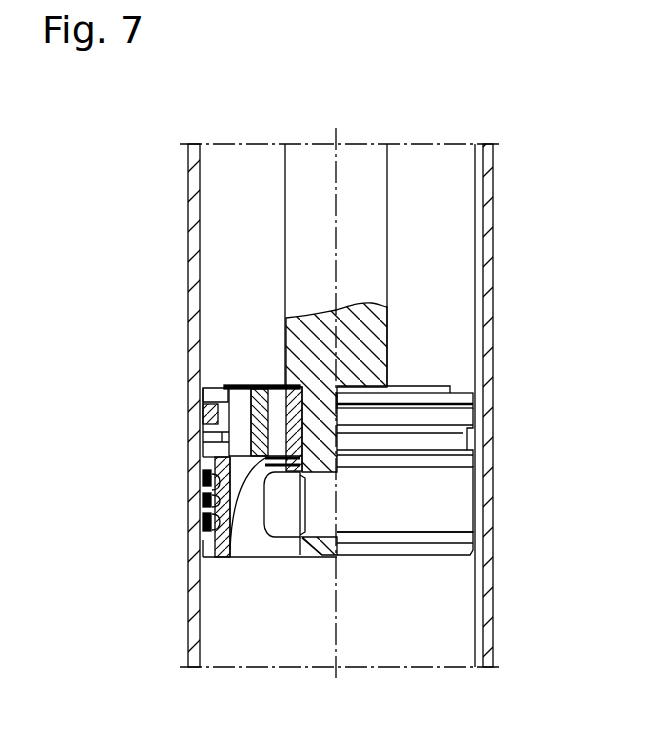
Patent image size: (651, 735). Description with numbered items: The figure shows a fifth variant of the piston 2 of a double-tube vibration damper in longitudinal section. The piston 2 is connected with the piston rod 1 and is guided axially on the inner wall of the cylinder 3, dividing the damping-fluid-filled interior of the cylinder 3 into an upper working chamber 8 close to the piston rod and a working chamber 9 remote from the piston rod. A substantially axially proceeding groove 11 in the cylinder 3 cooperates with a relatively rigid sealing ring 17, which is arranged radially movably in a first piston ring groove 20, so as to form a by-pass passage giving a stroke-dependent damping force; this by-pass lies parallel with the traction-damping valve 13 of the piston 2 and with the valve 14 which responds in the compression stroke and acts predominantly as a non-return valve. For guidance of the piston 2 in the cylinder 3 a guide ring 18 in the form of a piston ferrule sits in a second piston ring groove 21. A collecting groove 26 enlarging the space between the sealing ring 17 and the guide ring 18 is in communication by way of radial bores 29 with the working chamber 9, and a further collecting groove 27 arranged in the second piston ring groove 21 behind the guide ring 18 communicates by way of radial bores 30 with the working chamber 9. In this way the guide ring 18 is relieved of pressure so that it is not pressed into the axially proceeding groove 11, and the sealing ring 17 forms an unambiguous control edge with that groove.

The piston rod 1 is at (383, 178).
The piston 2 is at (438, 558).
The cylinder 3 is at (488, 200).
The working chamber 8 is at (457, 247).
The working chamber 9 is at (238, 585).
The groove 11 is at (478, 302).
The traction-damping valve 13 is at (232, 503).
The valve 14 is at (232, 380).
The sealing ring 17 is at (203, 410).
The guide ring 18 is at (453, 498).
The first piston ring groove 20 is at (210, 390).
The second piston ring groove 21 is at (205, 517).
The collecting groove 26 is at (468, 443).
The collecting groove 27 is at (203, 467).
The radial bores 29 is at (207, 440).
The radial bores 30 is at (212, 492).